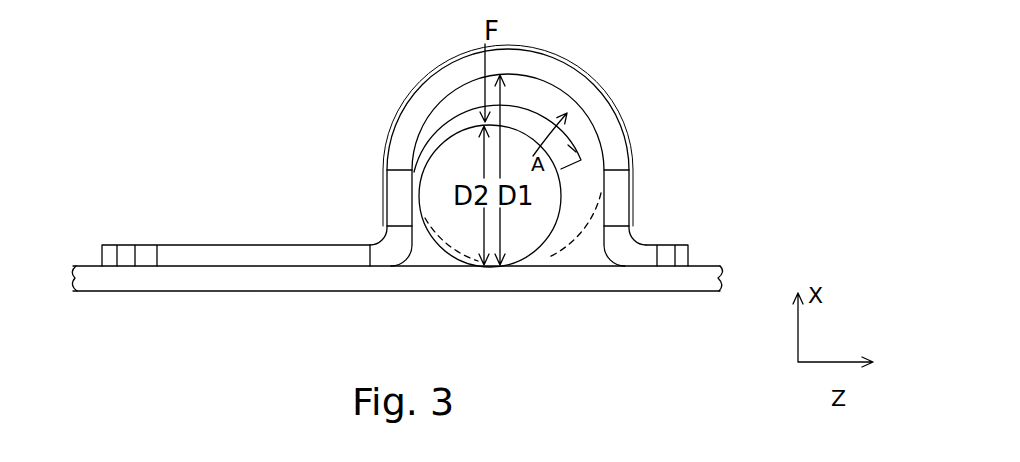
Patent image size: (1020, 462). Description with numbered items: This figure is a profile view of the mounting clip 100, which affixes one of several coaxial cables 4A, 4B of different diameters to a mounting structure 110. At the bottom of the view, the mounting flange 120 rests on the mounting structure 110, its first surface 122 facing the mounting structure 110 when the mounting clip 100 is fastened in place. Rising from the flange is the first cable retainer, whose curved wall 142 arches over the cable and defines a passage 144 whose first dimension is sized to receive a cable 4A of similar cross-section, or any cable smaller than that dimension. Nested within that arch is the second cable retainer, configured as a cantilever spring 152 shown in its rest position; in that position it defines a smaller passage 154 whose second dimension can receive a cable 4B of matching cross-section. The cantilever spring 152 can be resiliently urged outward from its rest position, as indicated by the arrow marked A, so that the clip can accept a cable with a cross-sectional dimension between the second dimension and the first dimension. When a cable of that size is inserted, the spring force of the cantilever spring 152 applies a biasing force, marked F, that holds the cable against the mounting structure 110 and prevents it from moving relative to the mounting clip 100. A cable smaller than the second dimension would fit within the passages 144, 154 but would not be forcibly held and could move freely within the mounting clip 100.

The mounting clip 100 is at (519, 227).
The mounting structure 110 is at (350, 281).
The mounting flange 120 is at (243, 247).
The first surface 122 is at (178, 267).
The curved wall 142 is at (630, 130).
The passage 144 is at (586, 244).
The cantilever spring 152 is at (542, 108).
The passage 154 is at (518, 213).
The coaxial cable 4A is at (638, 221).
The coaxial cable 4B is at (374, 229).